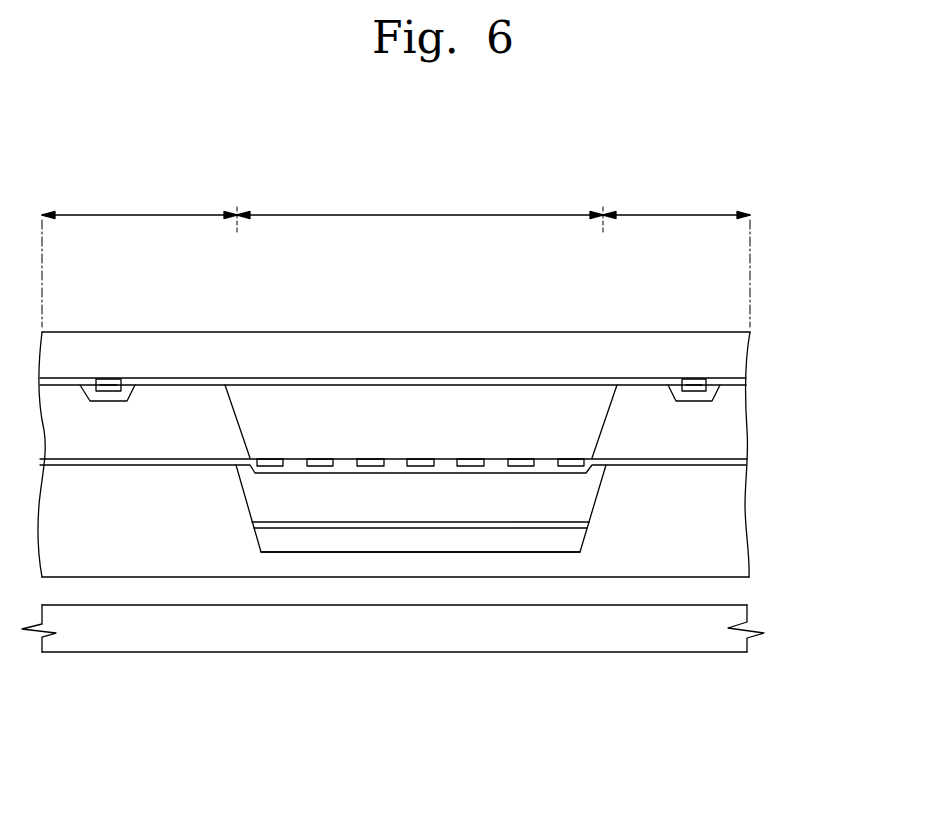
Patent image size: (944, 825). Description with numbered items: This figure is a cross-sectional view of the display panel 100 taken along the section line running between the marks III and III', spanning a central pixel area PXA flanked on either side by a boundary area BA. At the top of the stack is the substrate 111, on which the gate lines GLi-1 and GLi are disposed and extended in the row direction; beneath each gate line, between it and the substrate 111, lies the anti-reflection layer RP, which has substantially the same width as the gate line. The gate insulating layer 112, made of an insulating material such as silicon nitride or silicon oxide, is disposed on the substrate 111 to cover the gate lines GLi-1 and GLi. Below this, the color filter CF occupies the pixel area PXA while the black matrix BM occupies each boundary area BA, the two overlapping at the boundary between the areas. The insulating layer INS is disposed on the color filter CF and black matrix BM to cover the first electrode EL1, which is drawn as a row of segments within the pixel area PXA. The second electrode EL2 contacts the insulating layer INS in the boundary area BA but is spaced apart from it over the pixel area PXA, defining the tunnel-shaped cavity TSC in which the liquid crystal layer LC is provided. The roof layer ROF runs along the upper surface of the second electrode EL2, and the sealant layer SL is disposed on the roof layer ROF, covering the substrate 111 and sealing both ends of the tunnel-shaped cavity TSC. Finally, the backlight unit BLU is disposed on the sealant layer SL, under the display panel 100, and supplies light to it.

The display panel 100 is at (455, 499).
The substrate 111 is at (732, 347).
The gate insulating layer 112 is at (732, 383).
The anti-reflection layer RP is at (105, 388).
The gate line GLi is at (111, 388).
The gate line GLi-1 is at (699, 388).
The black matrix BM is at (732, 421).
The color filter CF is at (512, 420).
The insulating layer INS is at (733, 463).
The first electrode EL1 is at (375, 462).
The sealant layer SL is at (738, 526).
The liquid crystal layer LC is at (340, 508).
The tunnel-shaped cavity TSC is at (400, 507).
The second electrode EL2 is at (458, 525).
The roof layer ROF is at (518, 540).
The backlight unit BLU is at (733, 617).
The boundary area BA is at (396, 214).
The pixel area PXA is at (420, 207).
The section line III is at (42, 273).
The section line III' is at (751, 273).